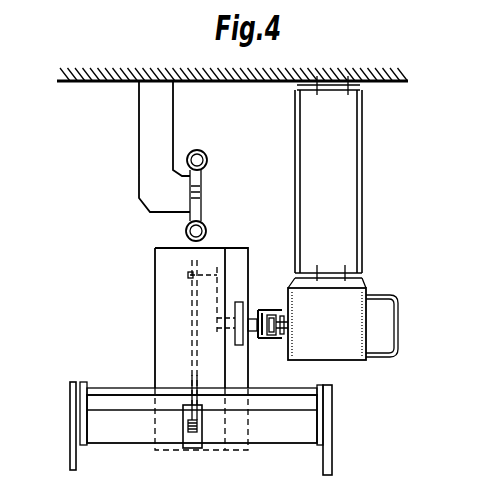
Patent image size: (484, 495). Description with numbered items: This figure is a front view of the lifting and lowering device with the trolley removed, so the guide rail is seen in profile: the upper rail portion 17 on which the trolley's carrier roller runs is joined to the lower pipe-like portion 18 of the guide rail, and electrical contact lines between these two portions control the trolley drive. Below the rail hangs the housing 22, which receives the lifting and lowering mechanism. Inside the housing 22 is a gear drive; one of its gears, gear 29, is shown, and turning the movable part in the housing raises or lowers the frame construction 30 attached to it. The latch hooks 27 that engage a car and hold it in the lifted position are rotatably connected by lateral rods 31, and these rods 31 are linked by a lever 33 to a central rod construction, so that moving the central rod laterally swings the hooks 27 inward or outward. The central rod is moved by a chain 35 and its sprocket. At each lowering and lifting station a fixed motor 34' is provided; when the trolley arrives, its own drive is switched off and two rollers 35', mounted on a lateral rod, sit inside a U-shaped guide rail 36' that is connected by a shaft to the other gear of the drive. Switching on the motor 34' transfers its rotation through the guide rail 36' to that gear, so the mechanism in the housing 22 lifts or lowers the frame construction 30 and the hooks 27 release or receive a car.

The rail portion 17 is at (206, 152).
The pipe-like portion of the guide rail 18 is at (207, 227).
The housing 22 is at (168, 287).
The latch hooks 27 is at (72, 458).
The gear 29 is at (245, 300).
The frame construction 30 is at (307, 428).
The lateral rods 31 is at (92, 386).
The lever 33 is at (177, 391).
The fixed motor 34' is at (369, 324).
The chain 35 is at (155, 332).
The rollers 35' is at (271, 361).
The U-shaped guide rail 36' is at (268, 305).